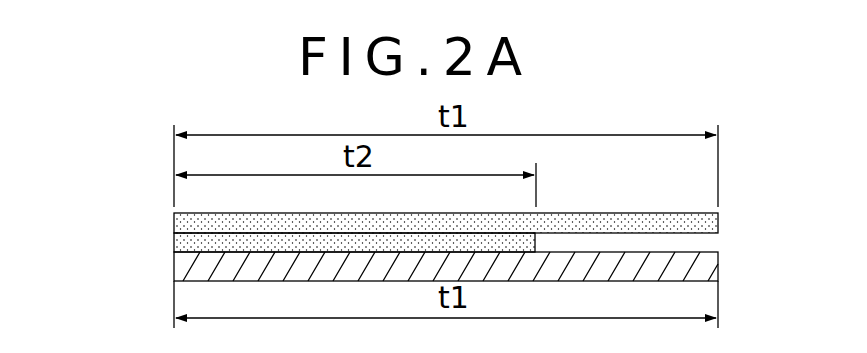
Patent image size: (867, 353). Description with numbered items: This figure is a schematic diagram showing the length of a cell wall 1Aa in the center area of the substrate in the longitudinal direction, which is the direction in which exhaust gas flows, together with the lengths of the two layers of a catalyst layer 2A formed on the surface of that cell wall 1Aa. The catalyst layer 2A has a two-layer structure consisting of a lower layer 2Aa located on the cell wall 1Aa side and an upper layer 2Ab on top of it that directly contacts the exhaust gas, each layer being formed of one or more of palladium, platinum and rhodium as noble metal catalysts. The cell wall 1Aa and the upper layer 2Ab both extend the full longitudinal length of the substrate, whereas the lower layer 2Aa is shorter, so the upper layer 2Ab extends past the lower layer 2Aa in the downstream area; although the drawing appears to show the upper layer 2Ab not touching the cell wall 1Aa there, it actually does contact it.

The catalyst layer 2A is at (375, 227).
The upper layer 2Ab is at (174, 225).
The lower layer 2Aa is at (174, 246).
The cell wall 1Aa is at (174, 265).